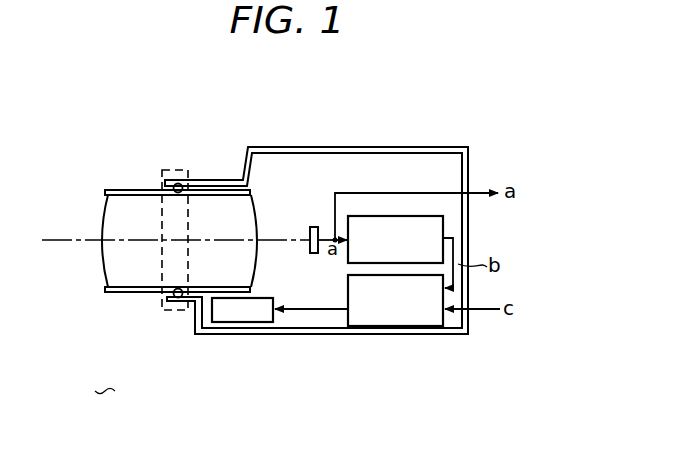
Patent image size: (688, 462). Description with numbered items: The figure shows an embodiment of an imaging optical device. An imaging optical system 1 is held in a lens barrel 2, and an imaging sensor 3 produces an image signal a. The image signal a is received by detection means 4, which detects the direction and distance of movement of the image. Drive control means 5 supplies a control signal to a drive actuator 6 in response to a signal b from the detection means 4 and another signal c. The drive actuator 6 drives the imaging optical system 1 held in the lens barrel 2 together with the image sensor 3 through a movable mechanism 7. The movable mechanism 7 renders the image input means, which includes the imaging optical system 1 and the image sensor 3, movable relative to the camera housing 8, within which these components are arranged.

The imaging optical system 1 is at (125, 277).
The lens barrel 2 is at (128, 190).
The imaging sensor 3 is at (312, 226).
The detection means 4 is at (357, 263).
The drive control means 5 is at (348, 292).
The drive actuator 6 is at (262, 305).
The movable mechanism 7 is at (173, 170).
The camera housing 8 is at (432, 148).